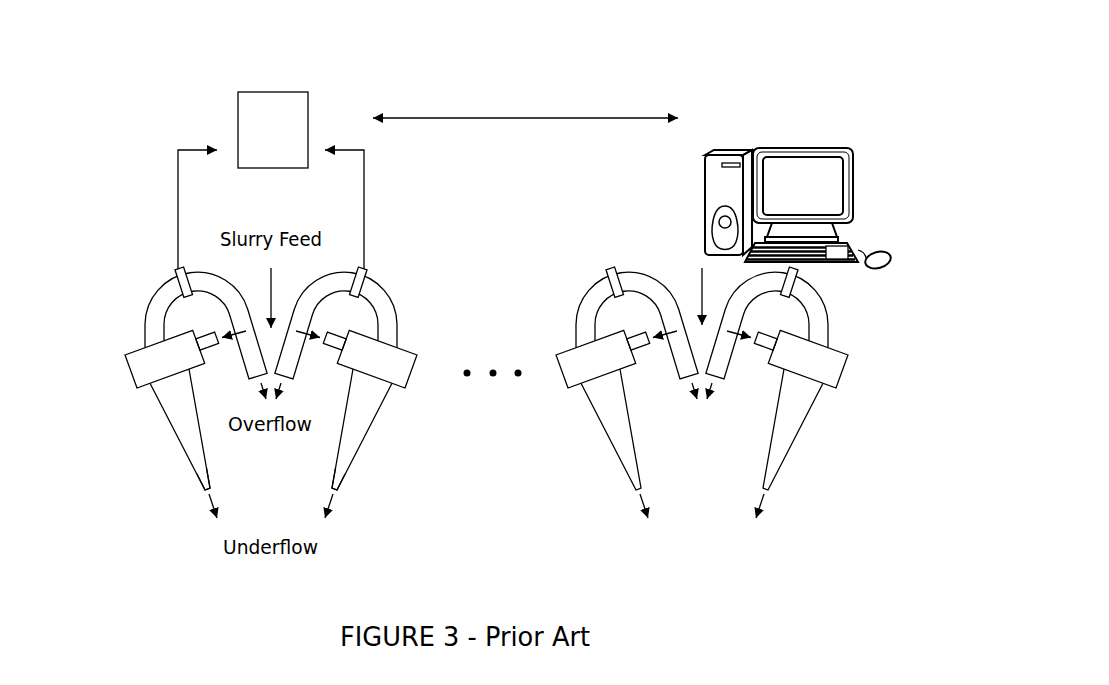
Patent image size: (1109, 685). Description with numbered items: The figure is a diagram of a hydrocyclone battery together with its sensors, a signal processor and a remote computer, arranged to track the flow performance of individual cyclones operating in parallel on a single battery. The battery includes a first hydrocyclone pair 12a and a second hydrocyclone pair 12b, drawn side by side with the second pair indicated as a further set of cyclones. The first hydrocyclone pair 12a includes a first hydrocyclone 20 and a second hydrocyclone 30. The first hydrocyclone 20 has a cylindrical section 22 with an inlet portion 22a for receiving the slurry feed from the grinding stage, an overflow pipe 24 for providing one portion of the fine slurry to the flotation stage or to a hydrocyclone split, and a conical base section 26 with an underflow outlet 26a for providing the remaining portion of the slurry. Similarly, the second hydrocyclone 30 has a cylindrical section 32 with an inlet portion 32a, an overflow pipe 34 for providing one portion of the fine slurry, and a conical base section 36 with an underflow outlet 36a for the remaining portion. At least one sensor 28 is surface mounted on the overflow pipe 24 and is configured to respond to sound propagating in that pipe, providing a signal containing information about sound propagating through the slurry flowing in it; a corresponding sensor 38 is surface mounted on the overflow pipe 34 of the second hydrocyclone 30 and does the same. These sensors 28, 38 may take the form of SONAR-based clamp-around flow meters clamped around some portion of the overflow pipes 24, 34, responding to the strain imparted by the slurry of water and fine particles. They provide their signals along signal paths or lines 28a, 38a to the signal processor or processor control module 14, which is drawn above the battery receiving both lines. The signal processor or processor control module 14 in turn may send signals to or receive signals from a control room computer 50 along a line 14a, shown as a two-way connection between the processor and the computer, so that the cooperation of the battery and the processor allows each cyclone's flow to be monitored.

The first hydrocyclone pair 12a is at (291, 393).
The second hydrocyclone pair 12b is at (643, 258).
The signal processor or processor control module 14 is at (273, 92).
The line 14a is at (574, 117).
The first hydrocyclone 20 is at (161, 394).
The cylindrical section 22 is at (130, 370).
The inlet portion 22a is at (205, 364).
The overflow pipe 24 is at (148, 303).
The conical base section 26 is at (182, 450).
The underflow outlet 26a is at (205, 495).
The sensor 28 is at (178, 268).
The signal path or line 28a is at (178, 175).
The second hydrocyclone 30 is at (384, 395).
The cylindrical section 32 is at (413, 370).
The inlet portion 32a is at (337, 364).
The overflow pipe 34 is at (398, 322).
The conical base section 36 is at (362, 452).
The underflow outlet 36a is at (338, 498).
The sensor 38 is at (365, 267).
The signal path or line 38a is at (364, 175).
The control room computer 50 is at (803, 147).